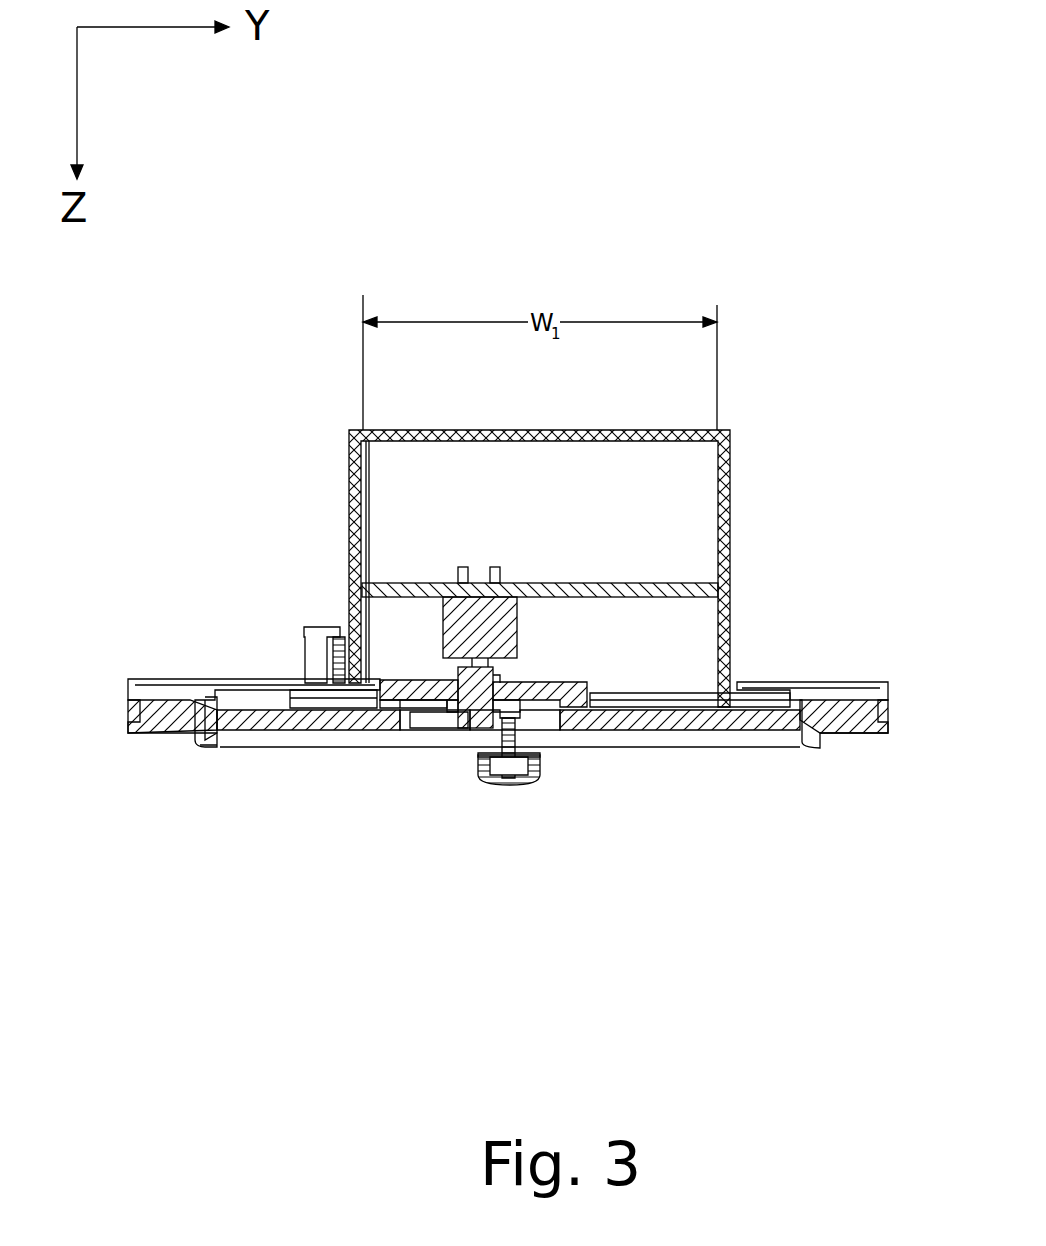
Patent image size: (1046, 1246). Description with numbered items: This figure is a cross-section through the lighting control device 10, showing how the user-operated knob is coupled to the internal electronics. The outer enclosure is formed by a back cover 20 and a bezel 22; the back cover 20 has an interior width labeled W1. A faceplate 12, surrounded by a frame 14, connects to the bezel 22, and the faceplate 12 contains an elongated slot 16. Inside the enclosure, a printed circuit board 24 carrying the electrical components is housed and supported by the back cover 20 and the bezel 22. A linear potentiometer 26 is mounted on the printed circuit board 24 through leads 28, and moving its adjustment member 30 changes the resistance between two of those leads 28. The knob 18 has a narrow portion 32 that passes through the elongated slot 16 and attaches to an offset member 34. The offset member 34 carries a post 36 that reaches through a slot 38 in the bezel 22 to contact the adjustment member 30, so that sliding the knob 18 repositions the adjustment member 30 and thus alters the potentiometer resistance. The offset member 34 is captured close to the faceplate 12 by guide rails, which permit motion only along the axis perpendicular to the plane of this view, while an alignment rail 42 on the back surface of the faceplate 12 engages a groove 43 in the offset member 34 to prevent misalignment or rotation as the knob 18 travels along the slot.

The lighting control device 10 is at (474, 233).
The faceplate 12 is at (232, 748).
The frame 14 is at (870, 738).
The elongated slot 16 is at (540, 755).
The knob 18 is at (523, 785).
The back cover 20 is at (520, 430).
The bezel 22 is at (740, 725).
The printed circuit board 24 is at (706, 590).
The linear potentiometer 26 is at (500, 618).
The leads 28 is at (495, 567).
The adjustment member 30 is at (440, 657).
The narrow portion 32 is at (505, 778).
The offset member 34 is at (440, 705).
The post 36 is at (497, 677).
The slot 38 is at (460, 687).
The alignment rail 42 is at (497, 714).
The groove 43 is at (458, 714).